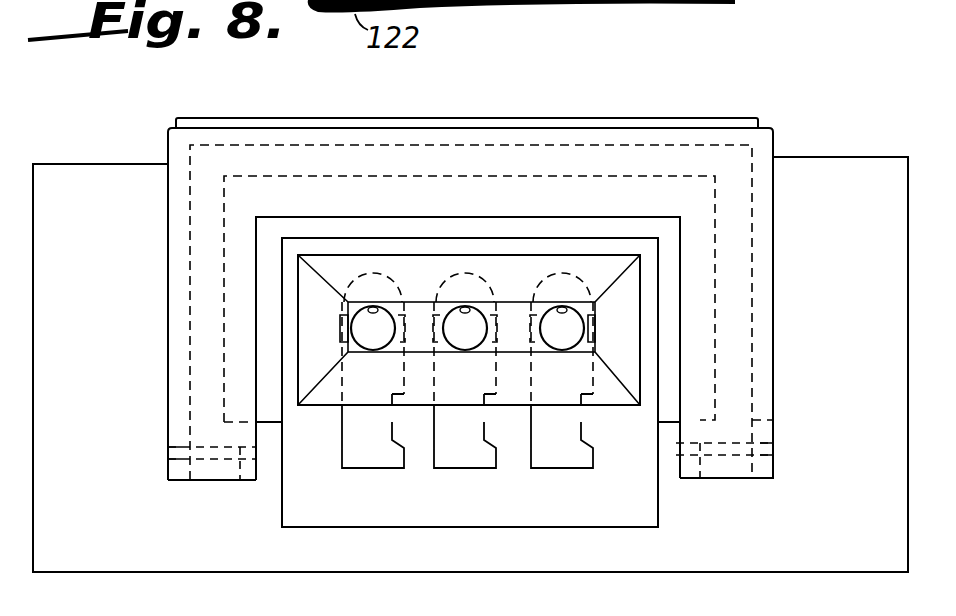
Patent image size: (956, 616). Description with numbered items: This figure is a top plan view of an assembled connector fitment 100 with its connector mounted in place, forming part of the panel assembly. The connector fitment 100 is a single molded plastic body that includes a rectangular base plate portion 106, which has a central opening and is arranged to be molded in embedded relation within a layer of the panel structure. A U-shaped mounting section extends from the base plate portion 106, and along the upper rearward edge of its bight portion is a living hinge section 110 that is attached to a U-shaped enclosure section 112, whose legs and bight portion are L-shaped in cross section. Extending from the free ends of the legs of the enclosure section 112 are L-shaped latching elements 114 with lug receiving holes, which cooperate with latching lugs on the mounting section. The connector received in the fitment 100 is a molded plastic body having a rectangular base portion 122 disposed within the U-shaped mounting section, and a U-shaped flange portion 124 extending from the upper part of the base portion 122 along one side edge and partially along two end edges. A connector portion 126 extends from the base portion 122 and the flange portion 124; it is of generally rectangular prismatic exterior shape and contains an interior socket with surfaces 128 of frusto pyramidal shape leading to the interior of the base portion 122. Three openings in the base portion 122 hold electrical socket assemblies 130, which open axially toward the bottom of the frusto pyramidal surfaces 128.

The connector fitment 100 is at (778, 129).
The base plate portion 106 is at (112, 131).
The living hinge section 110 is at (433, 118).
The U-shaped enclosure section 112 is at (170, 300).
The L-shaped latching elements 114 is at (168, 482).
The base portion 122 is at (283, 502).
The U-shaped flange portion 124 is at (268, 372).
The connector portion 126 is at (316, 425).
The frusto pyramidal surfaces 128 is at (422, 395).
The electrical socket assemblies 130 is at (372, 308).